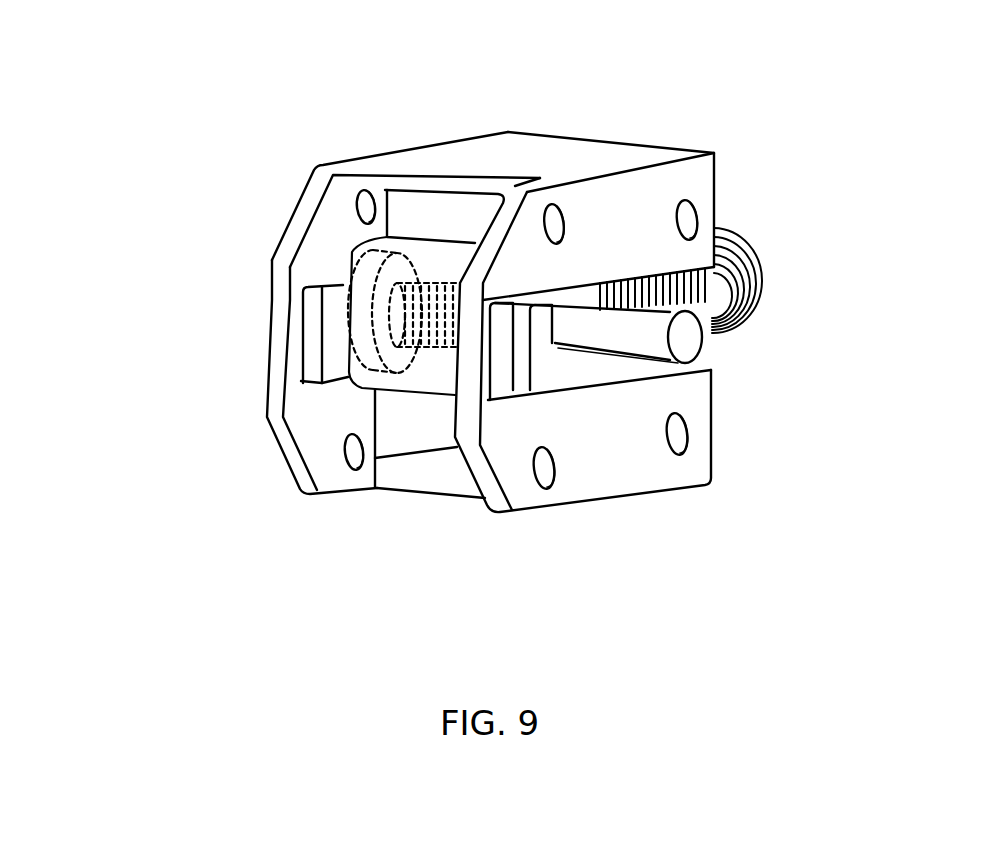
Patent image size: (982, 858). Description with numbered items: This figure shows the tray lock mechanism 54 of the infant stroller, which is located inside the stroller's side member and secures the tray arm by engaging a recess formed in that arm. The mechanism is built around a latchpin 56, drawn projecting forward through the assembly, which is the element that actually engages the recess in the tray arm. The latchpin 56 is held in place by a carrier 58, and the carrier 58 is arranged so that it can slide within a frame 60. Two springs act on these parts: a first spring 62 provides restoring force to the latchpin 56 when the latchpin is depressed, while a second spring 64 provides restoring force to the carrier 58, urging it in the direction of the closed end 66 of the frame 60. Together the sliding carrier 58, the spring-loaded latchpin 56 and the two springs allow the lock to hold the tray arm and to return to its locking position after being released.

The tray lock mechanism 54 is at (176, 133).
The latchpin 56 is at (702, 342).
The carrier 58 is at (580, 377).
The frame 60 is at (567, 512).
The first spring 62 is at (433, 350).
The second spring 64 is at (750, 277).
The closed end 66 is at (280, 345).